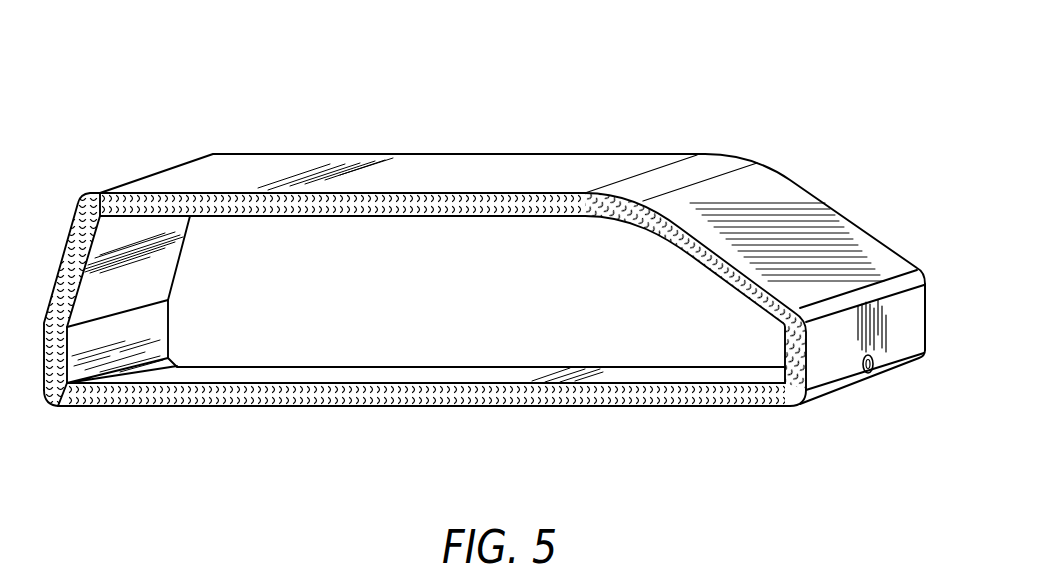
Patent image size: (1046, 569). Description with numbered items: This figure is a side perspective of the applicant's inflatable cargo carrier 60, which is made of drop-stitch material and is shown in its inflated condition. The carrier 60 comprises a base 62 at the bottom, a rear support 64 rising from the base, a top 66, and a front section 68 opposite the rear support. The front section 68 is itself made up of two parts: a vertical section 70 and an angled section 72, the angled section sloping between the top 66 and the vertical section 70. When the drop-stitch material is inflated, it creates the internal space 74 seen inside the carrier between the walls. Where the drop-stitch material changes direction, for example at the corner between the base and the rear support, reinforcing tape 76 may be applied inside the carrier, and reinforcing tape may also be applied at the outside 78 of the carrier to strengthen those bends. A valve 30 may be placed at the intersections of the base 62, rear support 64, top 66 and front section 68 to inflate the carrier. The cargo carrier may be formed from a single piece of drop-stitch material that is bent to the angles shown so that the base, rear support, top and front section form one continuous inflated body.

The carrier 60 is at (337, 141).
The base 62 is at (442, 407).
The rear support 64 is at (63, 258).
The top 66 is at (475, 173).
The front section 68 is at (927, 273).
The vertical section 70 is at (887, 338).
The angled section 72 is at (777, 208).
The internal space 74 is at (440, 301).
The reinforcing tape 76 is at (170, 362).
The outside of the carrier 78 is at (813, 311).
The valve 30 is at (872, 373).